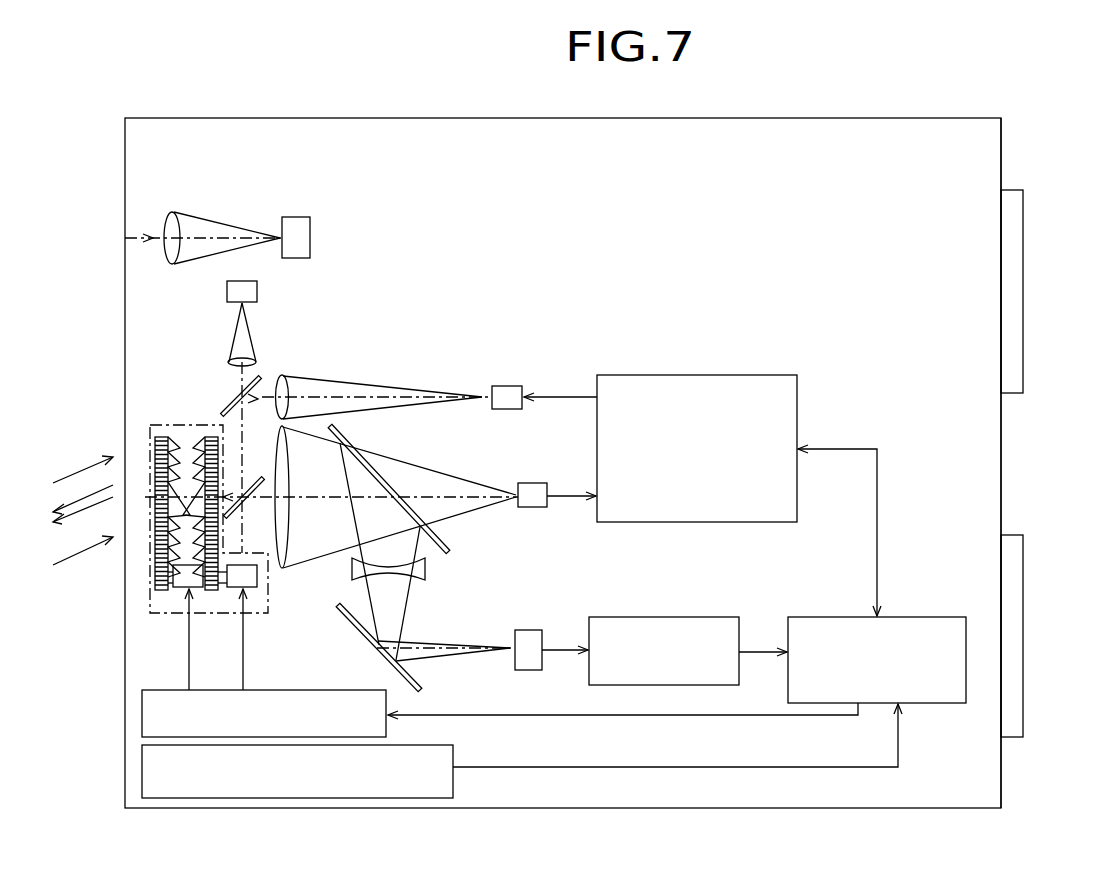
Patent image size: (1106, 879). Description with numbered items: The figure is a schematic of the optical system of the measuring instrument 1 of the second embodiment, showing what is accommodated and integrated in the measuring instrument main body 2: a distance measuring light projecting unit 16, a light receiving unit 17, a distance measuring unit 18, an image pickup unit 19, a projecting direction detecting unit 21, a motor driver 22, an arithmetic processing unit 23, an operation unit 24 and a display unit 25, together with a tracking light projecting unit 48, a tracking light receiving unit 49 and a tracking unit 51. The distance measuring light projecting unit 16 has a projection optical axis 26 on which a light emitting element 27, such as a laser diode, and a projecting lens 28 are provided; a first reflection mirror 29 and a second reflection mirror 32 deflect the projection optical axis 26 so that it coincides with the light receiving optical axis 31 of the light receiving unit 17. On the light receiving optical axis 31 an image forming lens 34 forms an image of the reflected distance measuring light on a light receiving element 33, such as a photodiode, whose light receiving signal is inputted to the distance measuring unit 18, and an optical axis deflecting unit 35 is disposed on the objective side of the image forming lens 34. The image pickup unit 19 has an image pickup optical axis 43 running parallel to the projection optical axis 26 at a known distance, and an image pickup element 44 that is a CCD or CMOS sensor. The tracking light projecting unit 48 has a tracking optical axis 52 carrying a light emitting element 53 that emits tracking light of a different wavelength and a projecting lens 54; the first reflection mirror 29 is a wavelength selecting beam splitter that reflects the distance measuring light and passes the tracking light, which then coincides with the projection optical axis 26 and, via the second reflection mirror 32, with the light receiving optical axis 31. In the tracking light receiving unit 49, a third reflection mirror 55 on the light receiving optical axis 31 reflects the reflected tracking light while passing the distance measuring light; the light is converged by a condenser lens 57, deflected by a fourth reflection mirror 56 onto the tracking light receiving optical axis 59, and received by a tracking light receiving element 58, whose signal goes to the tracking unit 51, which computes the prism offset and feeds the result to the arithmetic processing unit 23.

The measuring instrument 1 is at (487, 100).
The measuring instrument main body 2 is at (1003, 467).
The distance measuring light projecting unit 16 is at (398, 365).
The light receiving unit 17 is at (431, 496).
The distance measuring unit 18 is at (688, 375).
The image pickup unit 19 is at (249, 197).
The projecting direction detecting unit 21 is at (455, 746).
The motor driver 22 is at (262, 689).
The arithmetic processing unit 23 is at (925, 617).
The operation unit 24 is at (1023, 292).
The display unit 25 is at (1023, 632).
The projection optical axis 26 is at (366, 396).
The light emitting element 27 is at (507, 386).
The projecting lens 28 is at (287, 378).
The first reflection mirror 29 is at (232, 402).
The light receiving optical axis 31 is at (460, 493).
The second reflection mirror 32 is at (288, 484).
The light receiving element 33 is at (533, 483).
The image forming lens 34 is at (288, 523).
The optical axis deflecting unit 35 is at (323, 479).
The image pickup optical axis 43 is at (193, 236).
The image pickup element 44 is at (302, 217).
The tracking light projecting unit 48 is at (252, 313).
The tracking light receiving unit 49 is at (423, 621).
The tracking unit 51 is at (705, 617).
The tracking optical axis 52 is at (243, 342).
The light emitting element 53 is at (257, 291).
The projecting lens 54 is at (232, 352).
The third reflection mirror 55 is at (382, 475).
The fourth reflection mirror 56 is at (360, 631).
The condenser lens 57 is at (426, 570).
The tracking light receiving element 58 is at (532, 630).
The tracking light receiving optical axis 59 is at (458, 652).